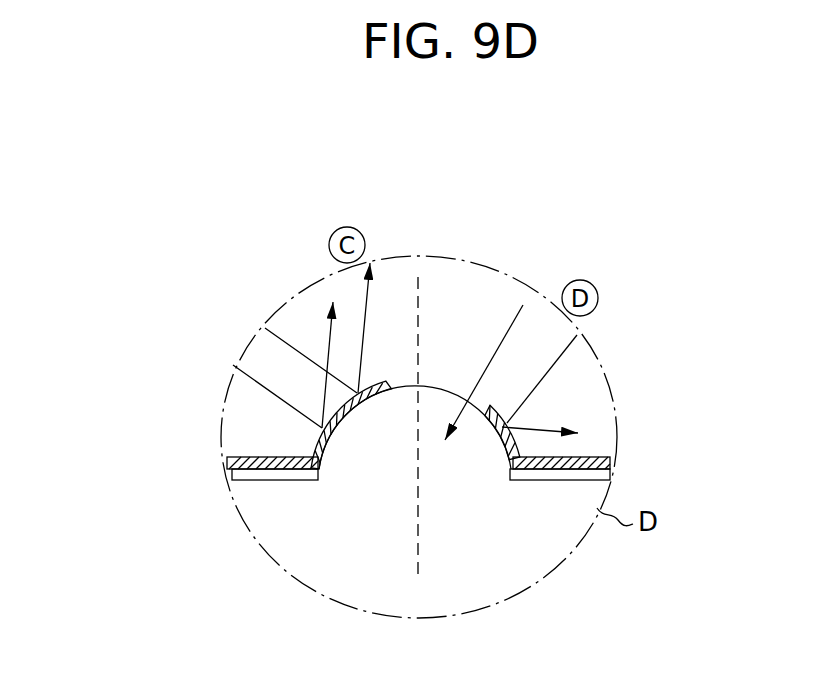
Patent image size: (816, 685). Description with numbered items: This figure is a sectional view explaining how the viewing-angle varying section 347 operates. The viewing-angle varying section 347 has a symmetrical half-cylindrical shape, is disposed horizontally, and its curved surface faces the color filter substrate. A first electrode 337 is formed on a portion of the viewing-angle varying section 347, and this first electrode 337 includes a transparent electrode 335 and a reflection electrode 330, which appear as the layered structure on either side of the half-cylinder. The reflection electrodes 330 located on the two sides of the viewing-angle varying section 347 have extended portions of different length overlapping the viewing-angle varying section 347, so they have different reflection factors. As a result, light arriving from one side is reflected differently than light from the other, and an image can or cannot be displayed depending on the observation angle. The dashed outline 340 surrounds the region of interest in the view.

The reflection electrode 330 is at (227, 460).
The transparent electrode 335 is at (227, 472).
The first electrode 337 is at (100, 435).
The reference circle 340 is at (250, 517).
The viewing-angle varying section 347 is at (407, 440).